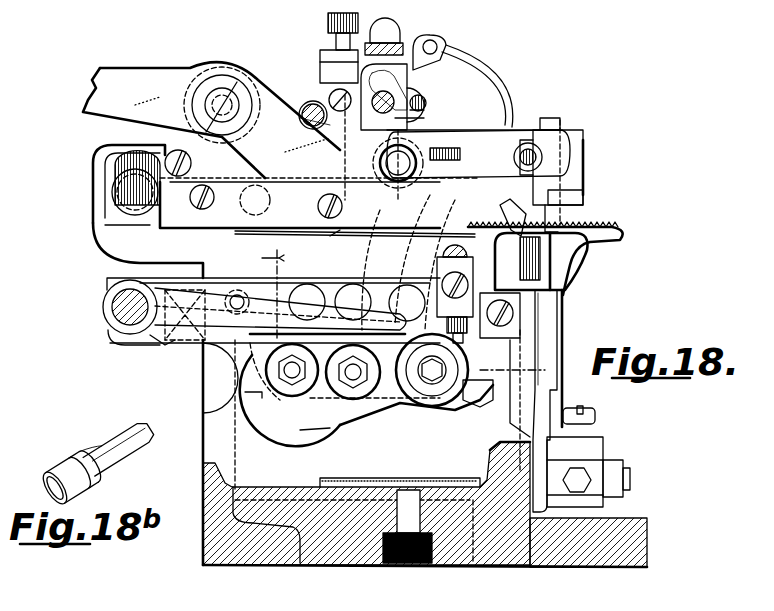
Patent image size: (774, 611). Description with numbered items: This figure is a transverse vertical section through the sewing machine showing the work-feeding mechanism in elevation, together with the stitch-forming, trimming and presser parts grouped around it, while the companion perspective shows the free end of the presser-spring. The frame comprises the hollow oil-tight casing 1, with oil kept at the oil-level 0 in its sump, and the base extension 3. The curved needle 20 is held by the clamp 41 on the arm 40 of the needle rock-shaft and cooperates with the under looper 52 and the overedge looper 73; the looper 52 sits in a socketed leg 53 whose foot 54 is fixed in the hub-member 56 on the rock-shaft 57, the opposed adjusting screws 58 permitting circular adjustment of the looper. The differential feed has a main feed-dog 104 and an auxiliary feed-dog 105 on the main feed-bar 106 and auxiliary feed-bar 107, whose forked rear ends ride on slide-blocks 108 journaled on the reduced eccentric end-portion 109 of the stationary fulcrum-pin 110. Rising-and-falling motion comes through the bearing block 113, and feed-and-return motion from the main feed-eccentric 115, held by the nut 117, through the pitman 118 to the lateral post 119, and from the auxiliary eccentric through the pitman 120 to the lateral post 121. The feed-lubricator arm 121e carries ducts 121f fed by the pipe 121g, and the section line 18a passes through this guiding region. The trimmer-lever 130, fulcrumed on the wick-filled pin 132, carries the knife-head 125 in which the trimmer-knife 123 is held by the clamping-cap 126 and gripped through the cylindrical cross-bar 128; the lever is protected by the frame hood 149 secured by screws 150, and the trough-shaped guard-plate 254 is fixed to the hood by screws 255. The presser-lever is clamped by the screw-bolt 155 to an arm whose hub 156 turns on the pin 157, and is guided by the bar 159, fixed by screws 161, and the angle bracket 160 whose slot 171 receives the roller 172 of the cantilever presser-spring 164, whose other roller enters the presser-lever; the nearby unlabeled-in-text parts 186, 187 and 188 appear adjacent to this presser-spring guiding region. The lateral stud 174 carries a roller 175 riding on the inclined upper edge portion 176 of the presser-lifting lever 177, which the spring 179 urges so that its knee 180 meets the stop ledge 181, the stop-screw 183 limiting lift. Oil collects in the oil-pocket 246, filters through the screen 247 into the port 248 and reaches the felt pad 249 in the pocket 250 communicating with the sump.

The presser-lifting lever 177 is at (130, 76).
The spring 179 is at (205, 72).
The frame hood 149 is at (280, 96).
The screws 150 is at (172, 158).
The lateral stud 174 is at (306, 110).
The roller 175 is at (300, 118).
The inclined upper edge portion 176 is at (292, 150).
The slot 171 is at (342, 106).
The screw-bolt 155 is at (115, 181).
The hub 156 is at (135, 226).
The pin 157 is at (125, 212).
The knee 180 is at (320, 203).
The screws 255 is at (205, 185).
The hollow wick-filled pin 132 is at (321, 201).
The trimmer-lever 130 is at (483, 135).
The screws 161 is at (330, 33).
The adjustable stop-screw 183 is at (330, 65).
The bar 159 is at (405, 44).
The pin 188 is at (440, 48).
The cam 187 is at (450, 68).
The angle bracket 160 is at (390, 80).
The cantilever presser-spring 164 is at (426, 92).
The lug 186 is at (426, 106).
The roller 172 is at (426, 119).
The clamp 41 is at (478, 154).
The stop ledge 181 is at (385, 163).
The main feed-dog 104 is at (486, 225).
The arm 40 is at (348, 247).
The overedge looper 73 is at (528, 212).
The auxiliary feed-dog 105 is at (585, 224).
The cylindrical cross-bar 128 is at (562, 128).
The knife-head 125 is at (543, 130).
The clamping-cap 126 is at (575, 150).
The upper reciprocatory trimmer-knife 123 is at (572, 198).
The needle 20 is at (562, 178).
The under looper 52 is at (545, 252).
The auxiliary feed-bar 107 is at (520, 320).
The trough-shaped guard-plate 254 is at (412, 240).
The main feed-bar 106 is at (412, 260).
The socketed leg 53 is at (552, 358).
The bearing block 113 is at (460, 396).
The foot 54 is at (580, 422).
The hub-member 56 is at (592, 450).
The adjusting screws 58 is at (590, 480).
The rock-shaft 57 is at (605, 497).
The base extension 3 is at (210, 491).
The hollow oil-tight casing 1 is at (205, 442).
The oil-level 0 is at (285, 497).
The oil-pocket 246 is at (495, 470).
The screen 247 is at (445, 480).
The port 248 is at (400, 525).
The felt pad 249 is at (402, 564).
The pocket 250 is at (390, 540).
The lateral post 121 is at (300, 392).
The pipe 121g is at (237, 292).
The feed-lubricator arm 121e is at (315, 290).
The ducts 121f is at (336, 292).
The section line 18a is at (278, 328).
The slide-blocks 108 is at (112, 309).
The reduced eccentric end-portion 109 is at (118, 320).
The stationary fulcrum-pin 110 is at (128, 342).
The lateral post 119 is at (303, 402).
The pitman 120 is at (320, 438).
The pitman 118 is at (355, 400).
The main feed-eccentric 115 is at (387, 405).
The nut 117 is at (432, 408).